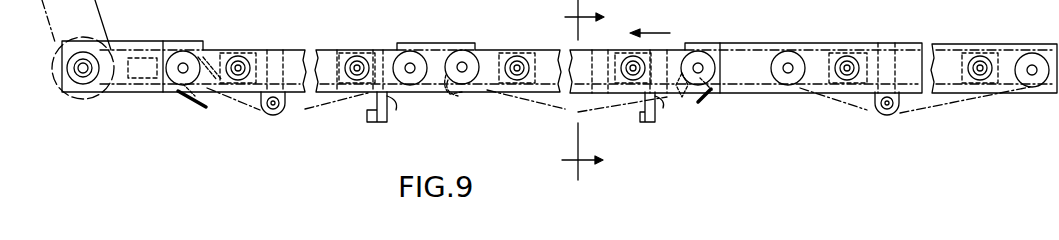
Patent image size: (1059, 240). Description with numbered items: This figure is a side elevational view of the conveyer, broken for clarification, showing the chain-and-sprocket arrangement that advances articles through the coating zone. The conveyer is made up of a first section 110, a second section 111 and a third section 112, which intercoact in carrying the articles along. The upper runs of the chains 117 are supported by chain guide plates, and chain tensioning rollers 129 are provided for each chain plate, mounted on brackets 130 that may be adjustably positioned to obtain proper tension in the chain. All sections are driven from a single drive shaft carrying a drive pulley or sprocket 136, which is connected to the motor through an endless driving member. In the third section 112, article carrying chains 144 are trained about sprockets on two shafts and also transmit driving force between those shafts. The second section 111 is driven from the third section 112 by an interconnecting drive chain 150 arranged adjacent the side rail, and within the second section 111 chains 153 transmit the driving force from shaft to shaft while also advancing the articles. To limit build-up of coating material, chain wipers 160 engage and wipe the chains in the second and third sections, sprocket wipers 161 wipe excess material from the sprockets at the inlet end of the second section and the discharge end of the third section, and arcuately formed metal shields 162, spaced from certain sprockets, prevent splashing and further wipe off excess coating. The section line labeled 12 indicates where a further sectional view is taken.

The drive pulley or sprocket 136 is at (55, 75).
The arcuately formed shields 162 is at (175, 92).
The sprocket wipers 161 is at (217, 87).
The third section 112 is at (290, 35).
The article carrying chains 144 is at (298, 113).
The chain wipers 160 is at (390, 96).
The interconnecting drive chain 150 is at (454, 93).
The chains 153 is at (541, 104).
The section line 12 is at (570, 90).
The second section 111 is at (614, 35).
The chain tensioning rollers 129 is at (878, 114).
The brackets 130 is at (899, 97).
The first section 110 is at (908, 32).
The chains 117 is at (962, 105).